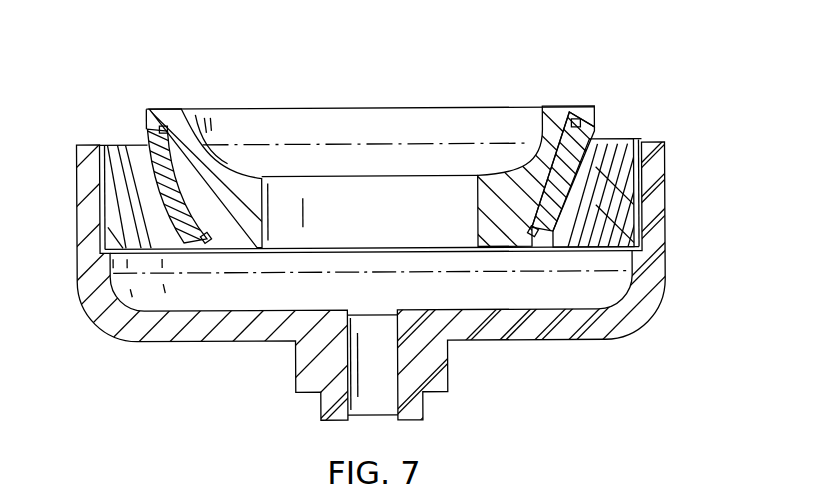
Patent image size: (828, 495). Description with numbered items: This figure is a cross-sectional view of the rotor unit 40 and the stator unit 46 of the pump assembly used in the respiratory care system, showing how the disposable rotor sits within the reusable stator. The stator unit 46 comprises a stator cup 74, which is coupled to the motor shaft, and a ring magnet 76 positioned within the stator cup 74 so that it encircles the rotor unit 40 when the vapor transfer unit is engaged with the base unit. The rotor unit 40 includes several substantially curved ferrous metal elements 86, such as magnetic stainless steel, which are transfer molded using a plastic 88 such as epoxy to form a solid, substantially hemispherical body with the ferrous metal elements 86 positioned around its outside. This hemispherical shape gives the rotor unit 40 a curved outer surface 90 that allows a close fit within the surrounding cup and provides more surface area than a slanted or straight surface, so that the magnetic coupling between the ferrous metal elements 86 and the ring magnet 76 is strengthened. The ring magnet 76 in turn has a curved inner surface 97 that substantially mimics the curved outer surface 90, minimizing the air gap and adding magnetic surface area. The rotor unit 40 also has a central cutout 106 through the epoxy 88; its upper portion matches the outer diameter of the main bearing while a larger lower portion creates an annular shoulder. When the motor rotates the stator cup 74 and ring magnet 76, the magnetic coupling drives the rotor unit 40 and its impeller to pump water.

The rotor unit 40 is at (168, 98).
The stator unit 46 is at (69, 138).
The stator cup 74 is at (88, 200).
The ring magnet 76 is at (112, 233).
The ferrous metal elements 86 is at (152, 149).
The plastic 88 is at (262, 122).
The curved outer surface 90 is at (634, 140).
The curved inner surface 97 is at (610, 195).
The central cutout 106 is at (288, 197).